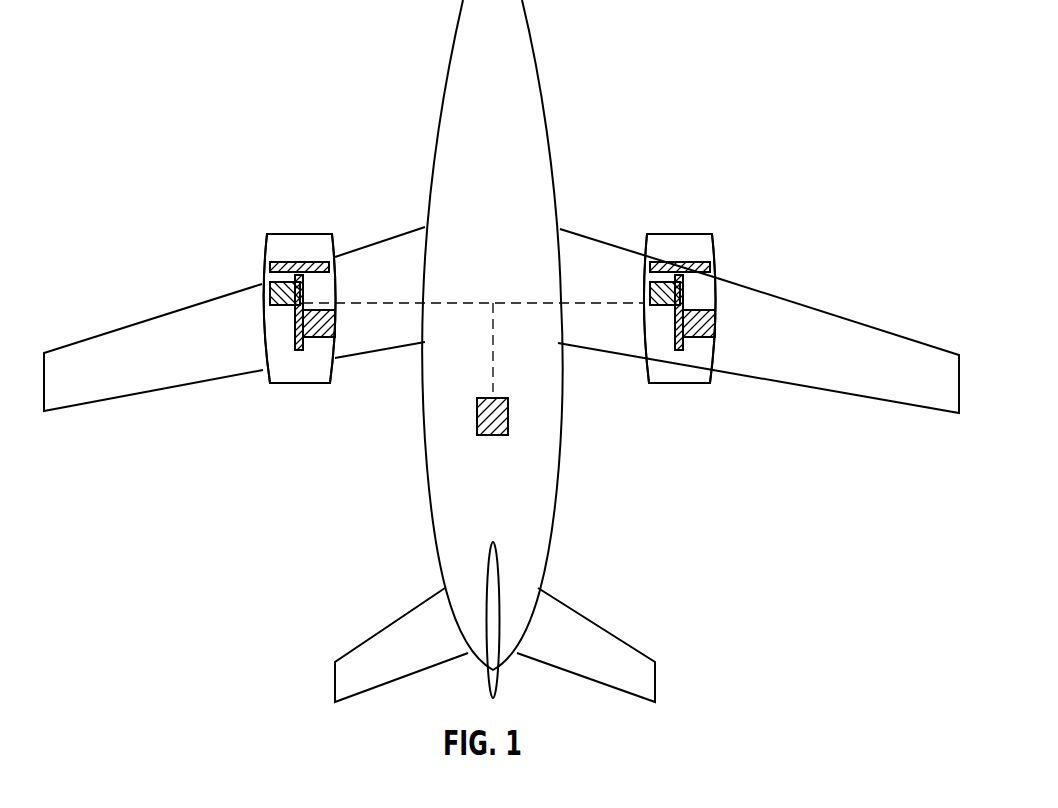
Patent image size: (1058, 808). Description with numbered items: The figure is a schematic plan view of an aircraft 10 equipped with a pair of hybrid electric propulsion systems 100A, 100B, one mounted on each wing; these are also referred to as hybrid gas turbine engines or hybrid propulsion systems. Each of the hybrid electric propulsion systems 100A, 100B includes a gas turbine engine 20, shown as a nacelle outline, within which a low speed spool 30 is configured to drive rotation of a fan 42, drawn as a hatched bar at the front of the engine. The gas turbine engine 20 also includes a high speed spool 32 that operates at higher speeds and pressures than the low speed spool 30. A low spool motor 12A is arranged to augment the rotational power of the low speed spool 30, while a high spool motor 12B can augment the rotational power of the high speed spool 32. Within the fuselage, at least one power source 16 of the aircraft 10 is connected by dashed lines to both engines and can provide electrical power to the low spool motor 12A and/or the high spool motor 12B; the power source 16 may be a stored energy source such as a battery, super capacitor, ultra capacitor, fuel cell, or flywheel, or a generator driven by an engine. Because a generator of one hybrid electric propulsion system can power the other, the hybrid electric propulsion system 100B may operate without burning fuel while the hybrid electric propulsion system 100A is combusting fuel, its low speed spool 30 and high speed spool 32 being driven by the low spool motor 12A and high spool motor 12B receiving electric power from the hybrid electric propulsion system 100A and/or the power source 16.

The aircraft 10 is at (387, 77).
The hybrid electric propulsion system 100A is at (245, 241).
The hybrid electric propulsion system 100B is at (740, 237).
The gas turbine engine 20 is at (305, 374).
The fan 42 is at (300, 261).
The low spool motor 12A is at (270, 291).
The low speed spool 30 is at (305, 300).
The high speed spool 32 is at (295, 328).
The high spool motor 12B is at (337, 322).
The power source 16 is at (493, 436).